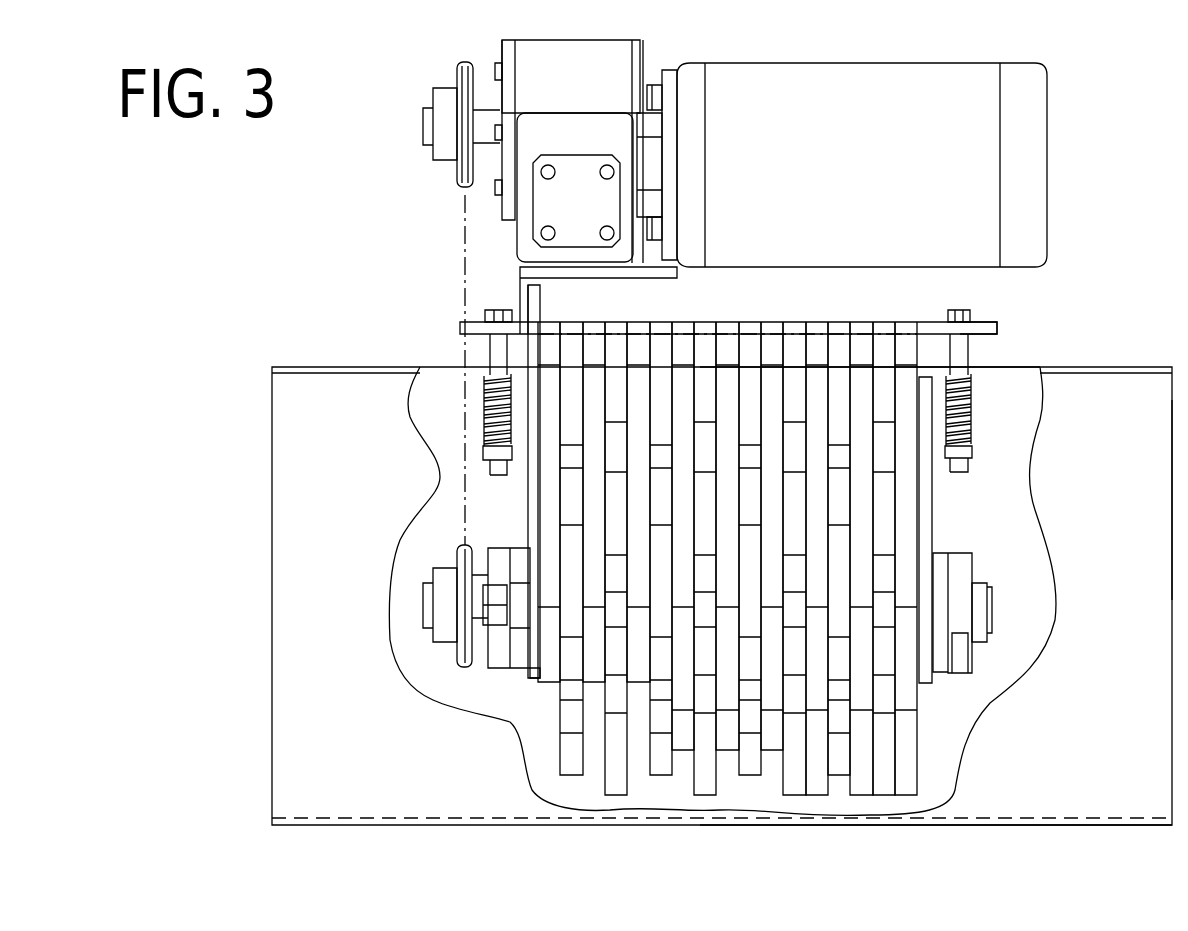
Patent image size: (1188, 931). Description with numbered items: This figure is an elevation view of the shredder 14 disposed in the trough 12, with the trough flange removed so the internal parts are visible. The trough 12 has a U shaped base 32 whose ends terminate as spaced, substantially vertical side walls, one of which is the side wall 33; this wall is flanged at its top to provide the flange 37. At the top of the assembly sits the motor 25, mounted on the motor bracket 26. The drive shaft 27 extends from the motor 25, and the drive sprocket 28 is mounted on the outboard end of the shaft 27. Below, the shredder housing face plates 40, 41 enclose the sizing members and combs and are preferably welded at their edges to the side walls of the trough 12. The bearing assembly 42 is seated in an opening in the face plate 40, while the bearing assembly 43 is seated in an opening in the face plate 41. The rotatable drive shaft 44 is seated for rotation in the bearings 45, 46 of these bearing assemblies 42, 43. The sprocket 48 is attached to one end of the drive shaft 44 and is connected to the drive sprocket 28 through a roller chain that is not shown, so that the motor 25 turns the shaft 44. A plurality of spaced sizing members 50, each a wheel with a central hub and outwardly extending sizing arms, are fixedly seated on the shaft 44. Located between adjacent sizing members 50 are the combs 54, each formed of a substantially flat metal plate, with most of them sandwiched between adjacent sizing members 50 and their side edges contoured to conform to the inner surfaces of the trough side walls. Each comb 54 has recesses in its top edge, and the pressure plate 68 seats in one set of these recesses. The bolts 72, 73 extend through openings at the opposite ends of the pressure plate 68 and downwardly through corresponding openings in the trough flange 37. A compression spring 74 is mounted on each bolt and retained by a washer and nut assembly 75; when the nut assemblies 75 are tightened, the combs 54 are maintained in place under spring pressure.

The trough 12 is at (362, 392).
The shredder 14 is at (990, 326).
The motor 25 is at (855, 180).
The motor bracket 26 is at (593, 280).
The drive shaft 27 is at (478, 135).
The drive sprocket 28 is at (458, 72).
The U shaped base 32 is at (1048, 823).
The trough side wall 33 is at (1129, 552).
The flange 37 is at (1082, 368).
The shredder housing face plate 40 is at (925, 512).
The shredder housing face plate 41 is at (530, 495).
The bearing assembly 42 is at (955, 662).
The bearing assembly 43 is at (498, 655).
The rotatable drive shaft 44 is at (425, 600).
The bearing 45 is at (957, 566).
The bearing 46 is at (494, 556).
The sprocket 48 is at (463, 549).
The sizing members 50 is at (613, 762).
The combs 54 is at (633, 685).
The pressure plate 68 is at (920, 326).
The bolt 72 is at (495, 308).
The bolt 73 is at (950, 312).
The compression spring 74 is at (483, 408).
The washer and nut assembly 75 is at (483, 456).